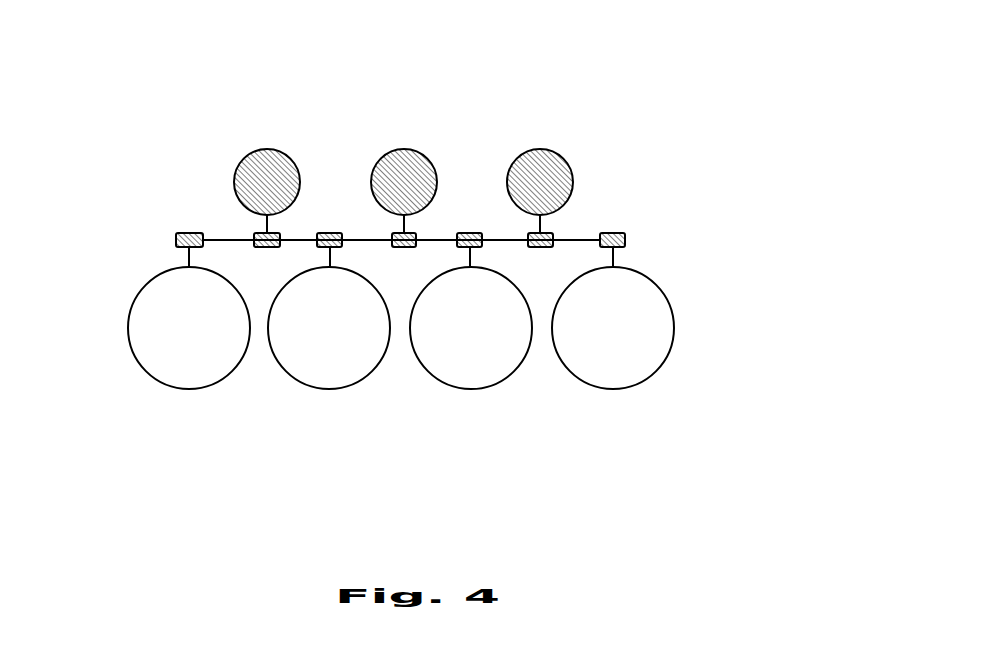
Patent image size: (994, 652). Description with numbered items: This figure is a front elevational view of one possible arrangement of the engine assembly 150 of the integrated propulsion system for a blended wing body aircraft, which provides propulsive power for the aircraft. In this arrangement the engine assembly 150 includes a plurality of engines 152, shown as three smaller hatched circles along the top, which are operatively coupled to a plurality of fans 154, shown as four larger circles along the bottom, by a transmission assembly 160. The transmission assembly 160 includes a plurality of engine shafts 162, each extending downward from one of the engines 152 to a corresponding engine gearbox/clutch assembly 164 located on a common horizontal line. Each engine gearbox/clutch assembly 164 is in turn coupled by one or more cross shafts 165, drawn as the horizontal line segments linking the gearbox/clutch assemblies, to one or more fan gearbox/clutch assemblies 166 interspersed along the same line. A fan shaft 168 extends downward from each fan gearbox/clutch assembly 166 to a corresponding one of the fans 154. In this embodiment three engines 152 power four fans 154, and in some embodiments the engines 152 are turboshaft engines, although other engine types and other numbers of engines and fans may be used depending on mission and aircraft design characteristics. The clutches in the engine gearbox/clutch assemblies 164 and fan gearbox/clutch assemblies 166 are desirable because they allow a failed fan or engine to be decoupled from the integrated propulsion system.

The engine assembly 150 is at (190, 70).
The engine 152 is at (252, 157).
The fan 154 is at (362, 421).
The transmission assembly 160 is at (748, 160).
The engine shaft 162 is at (257, 232).
The engine gearbox/clutch assembly 164 is at (260, 243).
The cross shaft 165 is at (362, 240).
The fan gearbox/clutch assembly 166 is at (177, 233).
The fan shaft 168 is at (190, 255).